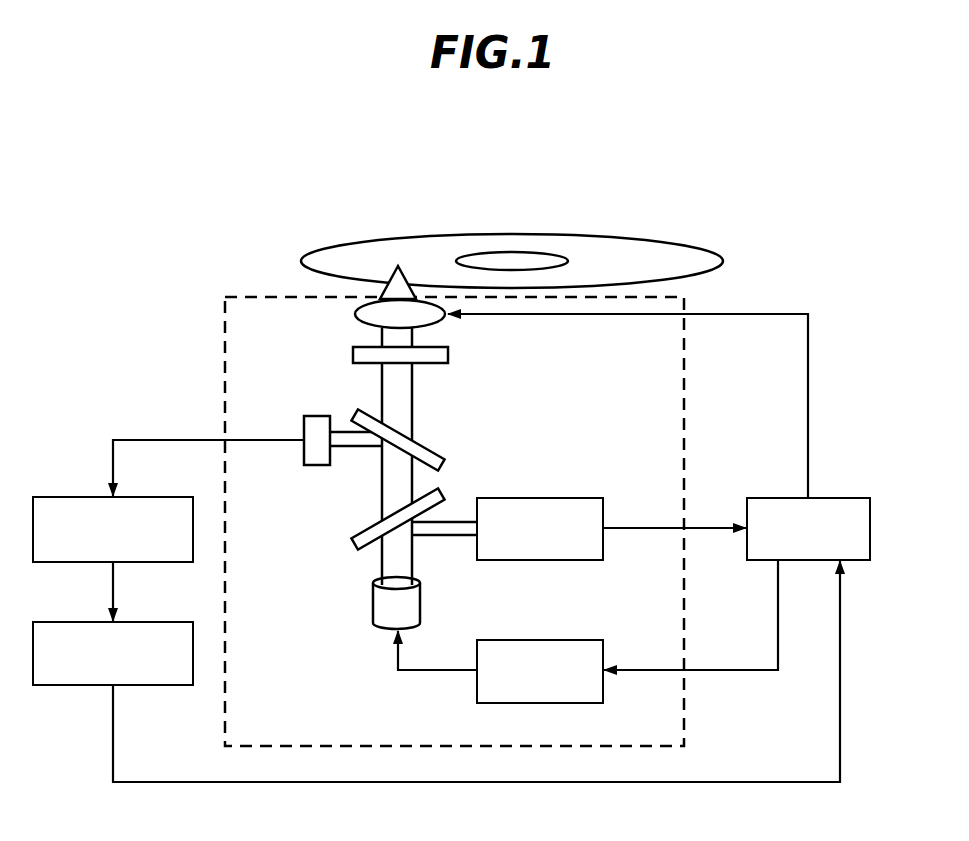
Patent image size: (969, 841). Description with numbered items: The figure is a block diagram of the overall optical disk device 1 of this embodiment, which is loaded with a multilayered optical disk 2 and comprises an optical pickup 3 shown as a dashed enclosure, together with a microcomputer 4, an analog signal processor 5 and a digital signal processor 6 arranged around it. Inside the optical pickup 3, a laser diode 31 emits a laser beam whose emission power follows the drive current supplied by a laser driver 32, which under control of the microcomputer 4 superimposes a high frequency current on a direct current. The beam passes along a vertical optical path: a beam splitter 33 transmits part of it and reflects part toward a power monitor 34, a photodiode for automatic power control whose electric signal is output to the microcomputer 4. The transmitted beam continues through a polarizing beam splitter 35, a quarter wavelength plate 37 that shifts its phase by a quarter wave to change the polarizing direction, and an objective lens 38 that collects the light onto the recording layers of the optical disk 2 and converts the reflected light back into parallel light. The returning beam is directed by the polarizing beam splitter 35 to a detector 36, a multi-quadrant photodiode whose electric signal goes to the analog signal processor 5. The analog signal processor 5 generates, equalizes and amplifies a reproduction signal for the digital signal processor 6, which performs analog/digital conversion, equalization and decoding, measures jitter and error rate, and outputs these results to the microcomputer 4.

The optical disk device 1 is at (218, 212).
The optical disk 2 is at (652, 244).
The optical pickup 3 is at (687, 398).
The microcomputer 4 is at (838, 497).
The analog signal processor 5 is at (65, 497).
The digital signal processor 6 is at (65, 687).
The laser diode 31 is at (378, 627).
The laser driver 32 is at (573, 640).
The beam splitter 33 is at (362, 540).
The power monitor 34 is at (573, 497).
The polarizing beam splitter 35 is at (427, 442).
The detector 36 is at (317, 466).
The quarter wavelength plate 37 is at (352, 355).
The objective lens 38 is at (355, 318).